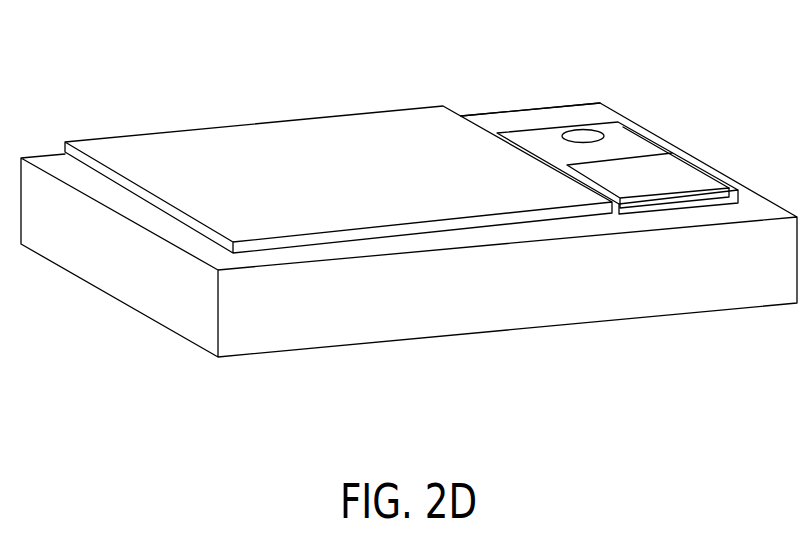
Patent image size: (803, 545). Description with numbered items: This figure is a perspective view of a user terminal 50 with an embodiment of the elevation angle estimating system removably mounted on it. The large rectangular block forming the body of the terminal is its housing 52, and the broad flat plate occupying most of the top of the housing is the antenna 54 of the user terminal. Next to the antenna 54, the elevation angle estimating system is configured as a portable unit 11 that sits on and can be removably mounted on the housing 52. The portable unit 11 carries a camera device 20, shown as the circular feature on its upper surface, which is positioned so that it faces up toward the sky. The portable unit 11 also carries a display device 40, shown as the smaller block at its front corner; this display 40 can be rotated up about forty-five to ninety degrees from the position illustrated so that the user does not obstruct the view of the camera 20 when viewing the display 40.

The portable unit 11 is at (637, 148).
The camera device 20 is at (580, 130).
The display device 40 is at (675, 172).
The user terminal 50 is at (527, 110).
The housing 52 is at (752, 202).
The antenna 54 is at (292, 137).